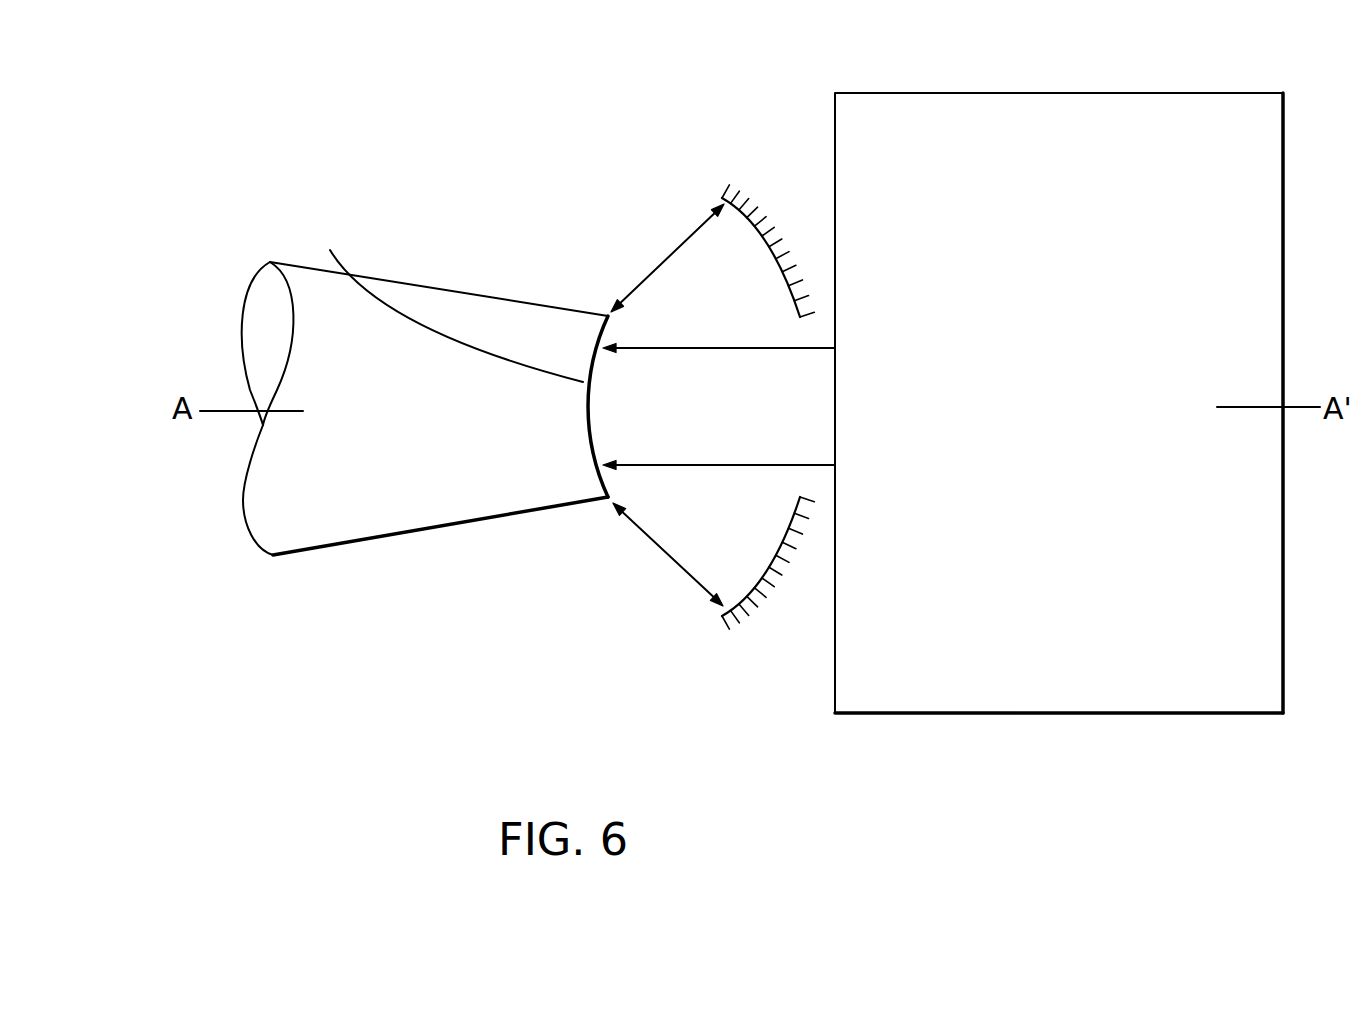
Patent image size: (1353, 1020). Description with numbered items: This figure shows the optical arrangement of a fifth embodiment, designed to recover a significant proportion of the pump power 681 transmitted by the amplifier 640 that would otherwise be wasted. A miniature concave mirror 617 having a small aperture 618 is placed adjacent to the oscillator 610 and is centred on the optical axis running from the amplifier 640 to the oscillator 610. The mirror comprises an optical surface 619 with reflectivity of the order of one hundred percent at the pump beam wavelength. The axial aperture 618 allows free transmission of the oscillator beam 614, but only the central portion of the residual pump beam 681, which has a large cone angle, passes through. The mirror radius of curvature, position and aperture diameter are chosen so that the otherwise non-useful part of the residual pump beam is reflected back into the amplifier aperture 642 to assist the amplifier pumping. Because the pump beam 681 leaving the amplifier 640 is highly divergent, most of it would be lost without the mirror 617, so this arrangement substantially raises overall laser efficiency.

The oscillator 610 is at (1027, 700).
The oscillator beam 614 is at (697, 466).
The concave mirror 617 is at (745, 658).
The aperture 618 is at (800, 333).
The optical surface 619 is at (757, 578).
The amplifier 640 is at (317, 522).
The amplifier aperture 642 is at (330, 250).
The pump beam 681 is at (667, 307).